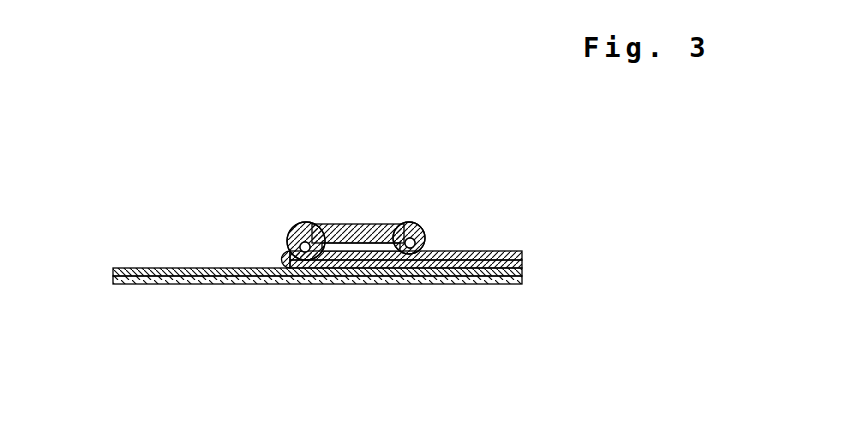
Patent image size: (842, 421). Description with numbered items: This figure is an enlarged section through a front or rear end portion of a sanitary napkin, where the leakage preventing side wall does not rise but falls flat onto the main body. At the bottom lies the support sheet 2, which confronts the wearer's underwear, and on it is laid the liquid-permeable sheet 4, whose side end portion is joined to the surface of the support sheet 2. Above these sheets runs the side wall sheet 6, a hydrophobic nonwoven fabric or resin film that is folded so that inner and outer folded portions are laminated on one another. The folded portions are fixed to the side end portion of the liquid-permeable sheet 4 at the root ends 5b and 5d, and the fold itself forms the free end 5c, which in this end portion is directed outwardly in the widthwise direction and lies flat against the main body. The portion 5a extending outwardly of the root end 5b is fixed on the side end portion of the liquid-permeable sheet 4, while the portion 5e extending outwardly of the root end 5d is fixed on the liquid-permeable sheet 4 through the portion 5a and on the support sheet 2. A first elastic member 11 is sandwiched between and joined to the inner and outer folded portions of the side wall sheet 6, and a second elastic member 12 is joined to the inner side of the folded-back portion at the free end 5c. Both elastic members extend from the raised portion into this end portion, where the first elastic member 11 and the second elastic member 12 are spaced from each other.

The support sheet 2 is at (160, 284).
The liquid-permeable sheet 4 is at (207, 268).
The portion extending outwardly of the root end 5b 5a is at (398, 264).
The root end 5b is at (285, 257).
The free end 5c is at (428, 228).
The root end 5d is at (330, 262).
The portion extending outwardly of the root end 5d 5e is at (466, 252).
The side wall sheet 6 is at (386, 230).
The first elastic member 11 is at (317, 223).
The second elastic member 12 is at (415, 222).